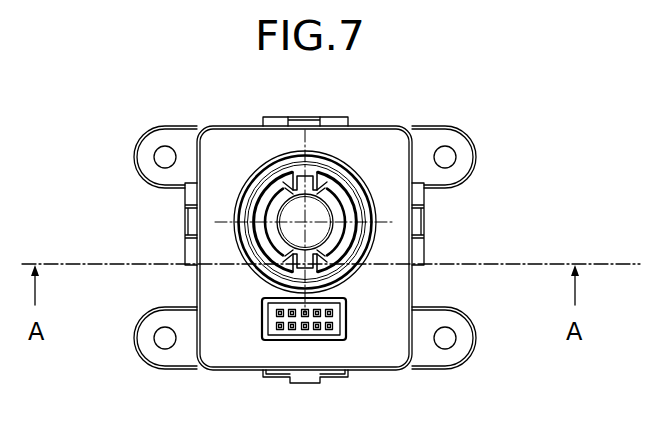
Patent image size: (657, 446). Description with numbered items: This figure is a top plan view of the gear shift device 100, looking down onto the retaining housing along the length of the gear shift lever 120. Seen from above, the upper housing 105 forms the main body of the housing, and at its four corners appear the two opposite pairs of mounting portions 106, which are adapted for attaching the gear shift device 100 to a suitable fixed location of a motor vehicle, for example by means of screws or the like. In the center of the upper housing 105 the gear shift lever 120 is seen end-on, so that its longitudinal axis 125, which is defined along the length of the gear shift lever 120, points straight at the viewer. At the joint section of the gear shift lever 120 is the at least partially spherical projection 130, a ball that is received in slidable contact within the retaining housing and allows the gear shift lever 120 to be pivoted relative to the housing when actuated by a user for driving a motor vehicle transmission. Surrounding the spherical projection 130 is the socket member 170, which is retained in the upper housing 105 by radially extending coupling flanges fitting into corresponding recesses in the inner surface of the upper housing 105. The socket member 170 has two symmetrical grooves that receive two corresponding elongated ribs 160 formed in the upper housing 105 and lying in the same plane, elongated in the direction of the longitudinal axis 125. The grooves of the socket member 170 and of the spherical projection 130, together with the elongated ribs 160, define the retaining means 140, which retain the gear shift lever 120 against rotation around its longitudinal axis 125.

The gear shift device 100 is at (509, 157).
The upper housing 105 is at (366, 359).
The mounting portions 106 is at (152, 142).
The gear shift lever 120 is at (288, 214).
The longitudinal axis 125 is at (307, 220).
The at least partially spherical projection 130 is at (338, 238).
The retaining means 140 is at (312, 160).
The elongated ribs 160 is at (268, 283).
The socket member 170 is at (258, 212).